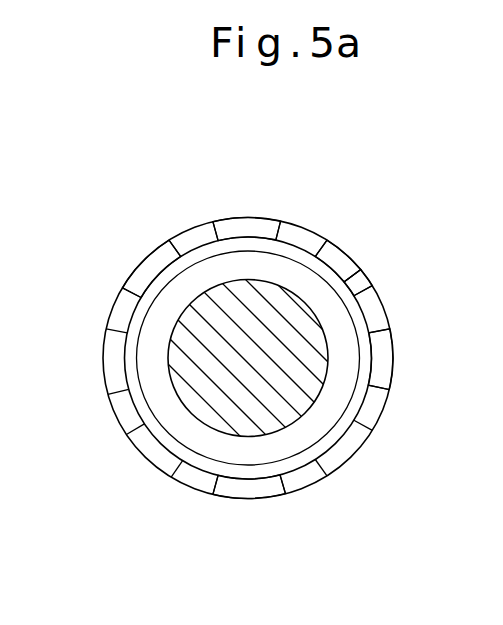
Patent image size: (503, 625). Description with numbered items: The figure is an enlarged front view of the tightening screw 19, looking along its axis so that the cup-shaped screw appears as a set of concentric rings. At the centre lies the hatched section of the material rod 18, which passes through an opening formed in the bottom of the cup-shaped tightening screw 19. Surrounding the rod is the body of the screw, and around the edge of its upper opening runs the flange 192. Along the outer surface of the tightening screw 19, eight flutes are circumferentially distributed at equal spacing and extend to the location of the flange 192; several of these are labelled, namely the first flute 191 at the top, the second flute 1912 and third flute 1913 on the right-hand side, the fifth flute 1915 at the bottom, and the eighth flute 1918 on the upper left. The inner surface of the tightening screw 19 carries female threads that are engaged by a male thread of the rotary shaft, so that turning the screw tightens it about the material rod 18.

The tightening screw 19 is at (318, 230).
The flute 191 is at (248, 239).
The flange 192 is at (335, 253).
The flute 1912 is at (362, 271).
The flute 1913 is at (372, 358).
The flute 1915 is at (243, 479).
The flute 1918 is at (158, 276).
The material rod 18 is at (183, 363).